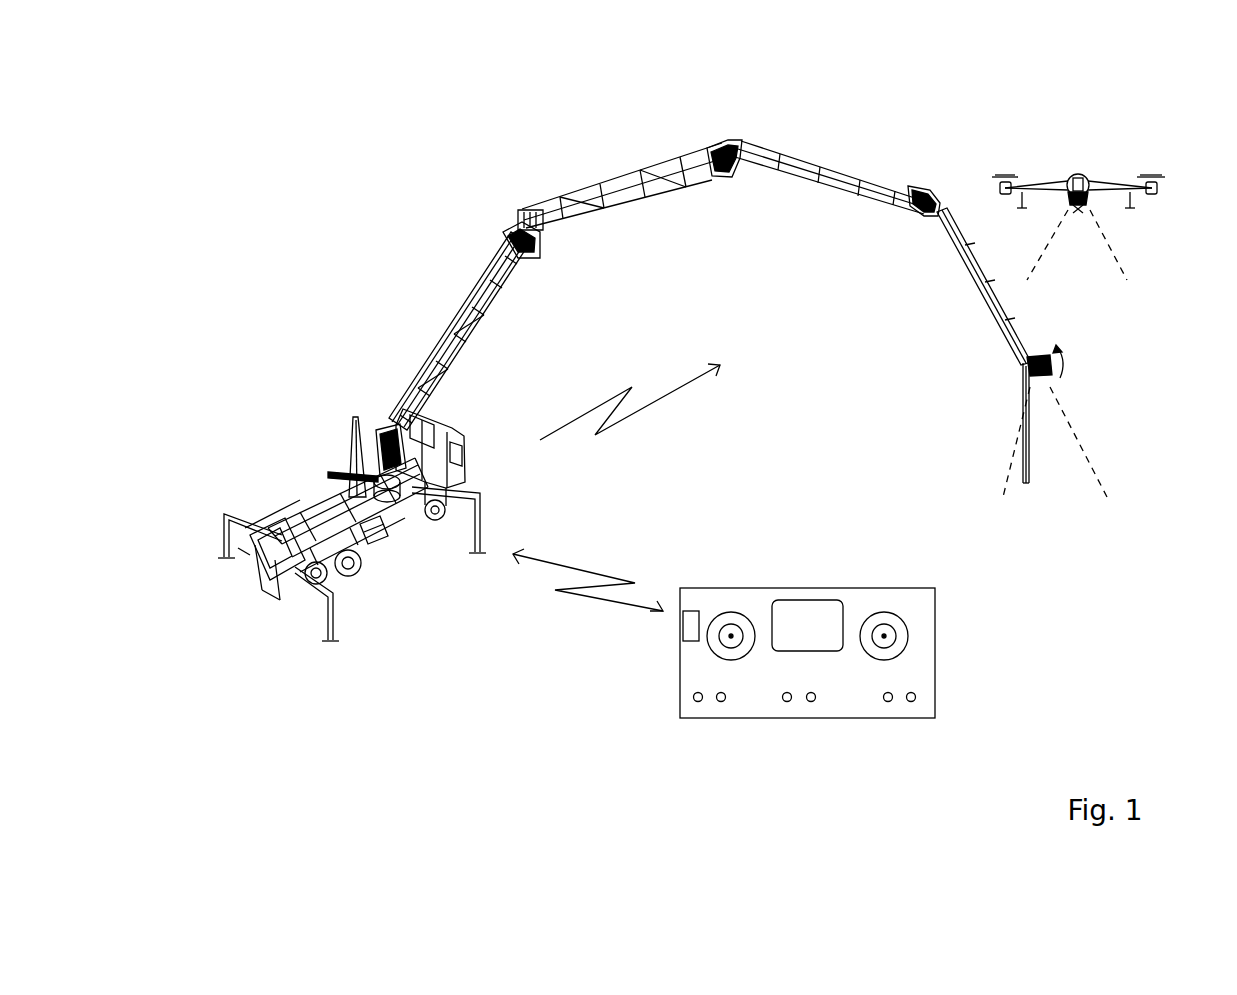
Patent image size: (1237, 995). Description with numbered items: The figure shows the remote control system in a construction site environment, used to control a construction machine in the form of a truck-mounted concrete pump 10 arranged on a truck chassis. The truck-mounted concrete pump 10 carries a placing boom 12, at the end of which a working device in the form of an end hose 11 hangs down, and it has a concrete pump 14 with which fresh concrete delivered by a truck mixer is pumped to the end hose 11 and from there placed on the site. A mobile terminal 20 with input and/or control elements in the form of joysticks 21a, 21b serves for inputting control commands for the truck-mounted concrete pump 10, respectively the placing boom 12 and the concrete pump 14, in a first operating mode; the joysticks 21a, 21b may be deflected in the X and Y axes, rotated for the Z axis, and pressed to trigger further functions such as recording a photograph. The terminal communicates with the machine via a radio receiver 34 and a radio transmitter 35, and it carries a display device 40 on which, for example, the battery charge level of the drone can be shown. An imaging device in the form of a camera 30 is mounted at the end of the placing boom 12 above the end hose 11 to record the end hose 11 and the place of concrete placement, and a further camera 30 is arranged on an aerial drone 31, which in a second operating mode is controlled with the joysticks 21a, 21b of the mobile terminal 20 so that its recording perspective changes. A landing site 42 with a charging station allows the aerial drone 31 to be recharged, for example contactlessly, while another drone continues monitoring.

The truck-mounted concrete pump 10 is at (280, 206).
The end hose 11 is at (973, 430).
The placing boom 12 is at (710, 285).
The concrete pump 14 is at (352, 521).
The mobile terminal 20 is at (763, 675).
The joystick 21a is at (653, 687).
The joystick 21b is at (952, 687).
The camera 30 is at (1048, 362).
The aerial drone 31 is at (1078, 136).
The radio receiver 34 is at (578, 654).
The radio transmitter 35 is at (578, 654).
The display device 40 is at (601, 566).
The landing site 42 is at (348, 426).